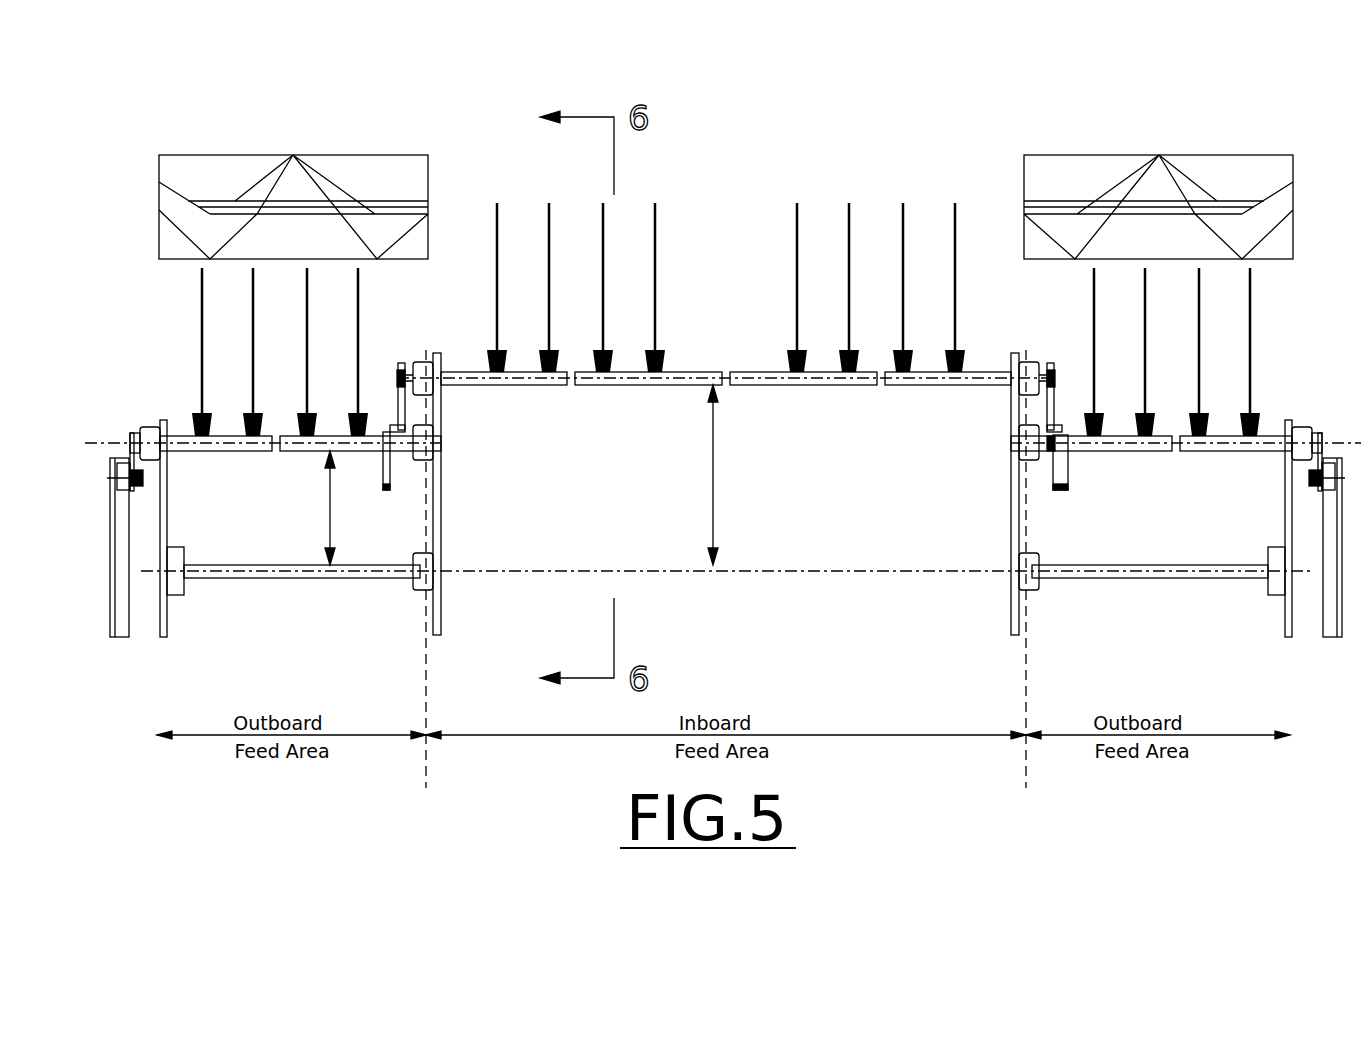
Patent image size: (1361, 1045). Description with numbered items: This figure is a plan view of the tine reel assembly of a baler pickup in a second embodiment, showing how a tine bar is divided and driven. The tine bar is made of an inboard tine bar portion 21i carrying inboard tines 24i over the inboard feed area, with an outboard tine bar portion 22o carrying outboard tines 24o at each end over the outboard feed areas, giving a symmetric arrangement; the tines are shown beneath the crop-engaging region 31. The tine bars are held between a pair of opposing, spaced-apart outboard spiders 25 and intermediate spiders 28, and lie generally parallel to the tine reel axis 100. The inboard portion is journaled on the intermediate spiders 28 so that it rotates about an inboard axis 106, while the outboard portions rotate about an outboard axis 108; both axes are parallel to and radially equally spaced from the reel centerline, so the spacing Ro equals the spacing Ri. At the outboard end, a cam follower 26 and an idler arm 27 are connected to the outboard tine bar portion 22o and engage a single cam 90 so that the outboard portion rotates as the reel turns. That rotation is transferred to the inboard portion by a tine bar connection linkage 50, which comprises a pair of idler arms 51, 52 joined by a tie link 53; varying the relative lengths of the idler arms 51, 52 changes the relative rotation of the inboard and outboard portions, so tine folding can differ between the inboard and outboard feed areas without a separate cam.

The hopper / feed bin 31 is at (330, 155).
The outboard tines 24o is at (200, 350).
The inboard tines 24i is at (656, 240).
The inboard feed tube 21i is at (633, 387).
The outboard tine bar portion 22o is at (182, 452).
The inboard axis 106 is at (687, 372).
The outboard axis 108 is at (122, 445).
The tine reel axis 100 is at (917, 575).
The intermediate spider 28 is at (440, 495).
The outboard spider 25 is at (163, 612).
The cam 90 is at (113, 617).
The cam follower 26 is at (123, 490).
The idler arm 27 is at (1325, 437).
The tine bar connection linkage 50 is at (405, 348).
The idler arm 51 is at (1072, 468).
The idler arm 52 is at (400, 408).
The tie link 53 is at (1055, 472).
The outboard tine bar spacing Ro is at (330, 515).
The inboard tine bar spacing Ri is at (715, 510).